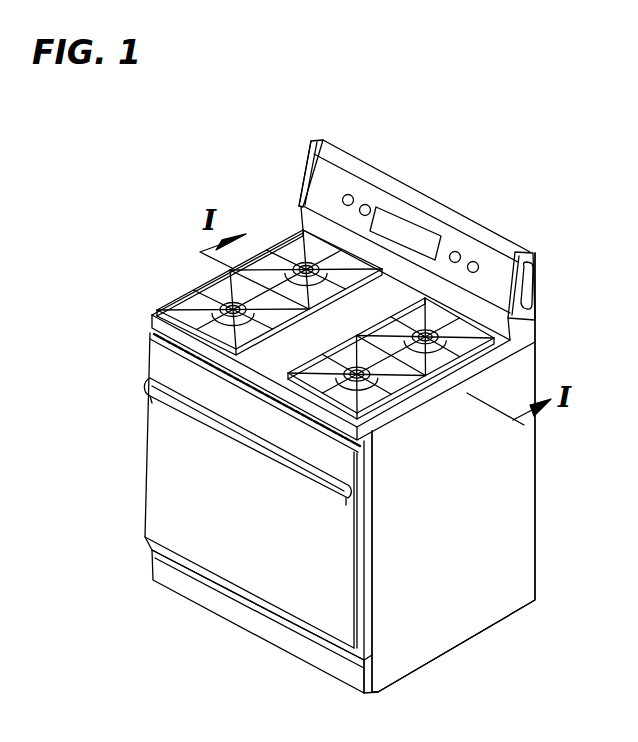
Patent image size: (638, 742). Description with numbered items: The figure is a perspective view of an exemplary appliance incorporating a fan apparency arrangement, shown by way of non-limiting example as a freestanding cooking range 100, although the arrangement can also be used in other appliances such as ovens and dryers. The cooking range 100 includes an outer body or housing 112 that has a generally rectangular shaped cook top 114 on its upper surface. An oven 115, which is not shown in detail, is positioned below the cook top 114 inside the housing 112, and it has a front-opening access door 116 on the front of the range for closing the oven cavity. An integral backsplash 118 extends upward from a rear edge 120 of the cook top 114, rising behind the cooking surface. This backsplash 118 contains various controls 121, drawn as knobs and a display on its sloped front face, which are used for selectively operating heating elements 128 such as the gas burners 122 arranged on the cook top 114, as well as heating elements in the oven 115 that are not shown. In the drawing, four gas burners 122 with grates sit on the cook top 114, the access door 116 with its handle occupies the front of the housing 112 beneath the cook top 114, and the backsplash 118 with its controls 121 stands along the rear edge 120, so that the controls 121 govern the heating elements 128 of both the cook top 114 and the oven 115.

The cooking range 100 is at (443, 168).
The outer body or housing 112 is at (505, 572).
The cook top 114 is at (392, 296).
The oven 115 is at (489, 486).
The access door 116 is at (178, 468).
The backsplash 118 is at (358, 186).
The rear edge 120 is at (472, 306).
The controls 121 is at (369, 208).
The gas burners 122 is at (297, 268).
The heating elements 128 is at (303, 197).